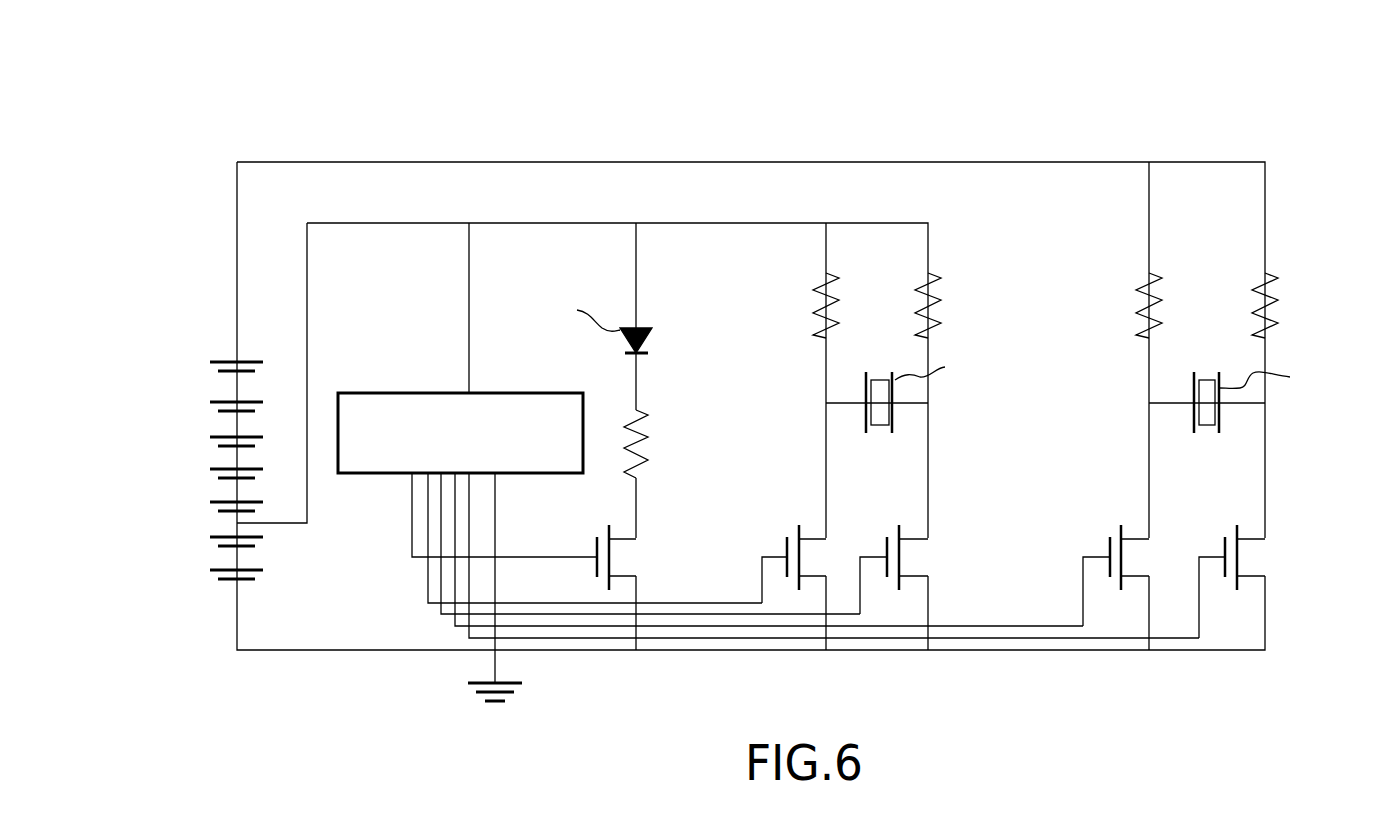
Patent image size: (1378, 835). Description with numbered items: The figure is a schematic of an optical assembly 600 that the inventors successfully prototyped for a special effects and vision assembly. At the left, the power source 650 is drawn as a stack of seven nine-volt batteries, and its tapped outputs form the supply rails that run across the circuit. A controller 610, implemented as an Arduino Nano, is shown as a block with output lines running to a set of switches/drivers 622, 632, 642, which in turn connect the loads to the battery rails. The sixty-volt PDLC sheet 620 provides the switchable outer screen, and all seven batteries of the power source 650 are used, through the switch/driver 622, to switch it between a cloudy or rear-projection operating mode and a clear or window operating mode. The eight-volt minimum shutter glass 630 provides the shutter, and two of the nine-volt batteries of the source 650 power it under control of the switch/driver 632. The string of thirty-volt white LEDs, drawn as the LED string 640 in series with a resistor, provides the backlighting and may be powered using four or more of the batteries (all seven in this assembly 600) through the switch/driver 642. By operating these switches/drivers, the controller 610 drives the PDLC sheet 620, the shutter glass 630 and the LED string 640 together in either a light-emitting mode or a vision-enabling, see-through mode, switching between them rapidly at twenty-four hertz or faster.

The optical assembly 600 is at (1215, 98).
The controller 610 is at (375, 393).
The PDLC sheet 620 is at (1250, 386).
The switch/driver 622 is at (1268, 557).
The shutter glass 630 is at (938, 377).
The switch/driver 632 is at (941, 557).
The LED string 640 is at (652, 328).
The switch/driver 642 is at (726, 511).
The power source 650 is at (184, 428).